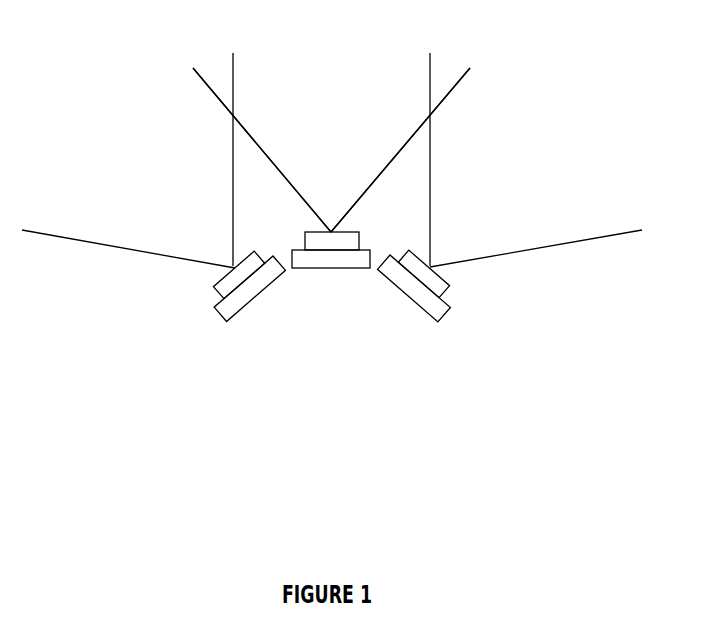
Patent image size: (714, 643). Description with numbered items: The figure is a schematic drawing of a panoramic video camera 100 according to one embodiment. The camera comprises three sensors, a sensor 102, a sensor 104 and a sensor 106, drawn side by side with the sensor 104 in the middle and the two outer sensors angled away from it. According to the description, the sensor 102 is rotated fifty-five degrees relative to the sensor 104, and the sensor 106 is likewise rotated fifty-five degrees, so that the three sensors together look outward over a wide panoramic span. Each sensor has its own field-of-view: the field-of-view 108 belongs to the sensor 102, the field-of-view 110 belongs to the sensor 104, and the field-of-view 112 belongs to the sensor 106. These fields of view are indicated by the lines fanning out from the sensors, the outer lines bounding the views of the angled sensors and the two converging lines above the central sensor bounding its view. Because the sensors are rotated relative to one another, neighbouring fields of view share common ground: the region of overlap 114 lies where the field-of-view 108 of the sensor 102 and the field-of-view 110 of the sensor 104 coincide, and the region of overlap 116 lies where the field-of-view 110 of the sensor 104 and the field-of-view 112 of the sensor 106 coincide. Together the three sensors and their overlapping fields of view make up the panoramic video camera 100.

The panoramic video camera 100 is at (163, 370).
The sensor 102 is at (247, 307).
The sensor 104 is at (327, 268).
The sensor 106 is at (430, 317).
The field-of-view 108 is at (122, 147).
The field-of-view 110 is at (341, 72).
The field-of-view 112 is at (567, 115).
The region of overlap 114 is at (218, 72).
The region of overlap 116 is at (447, 73).